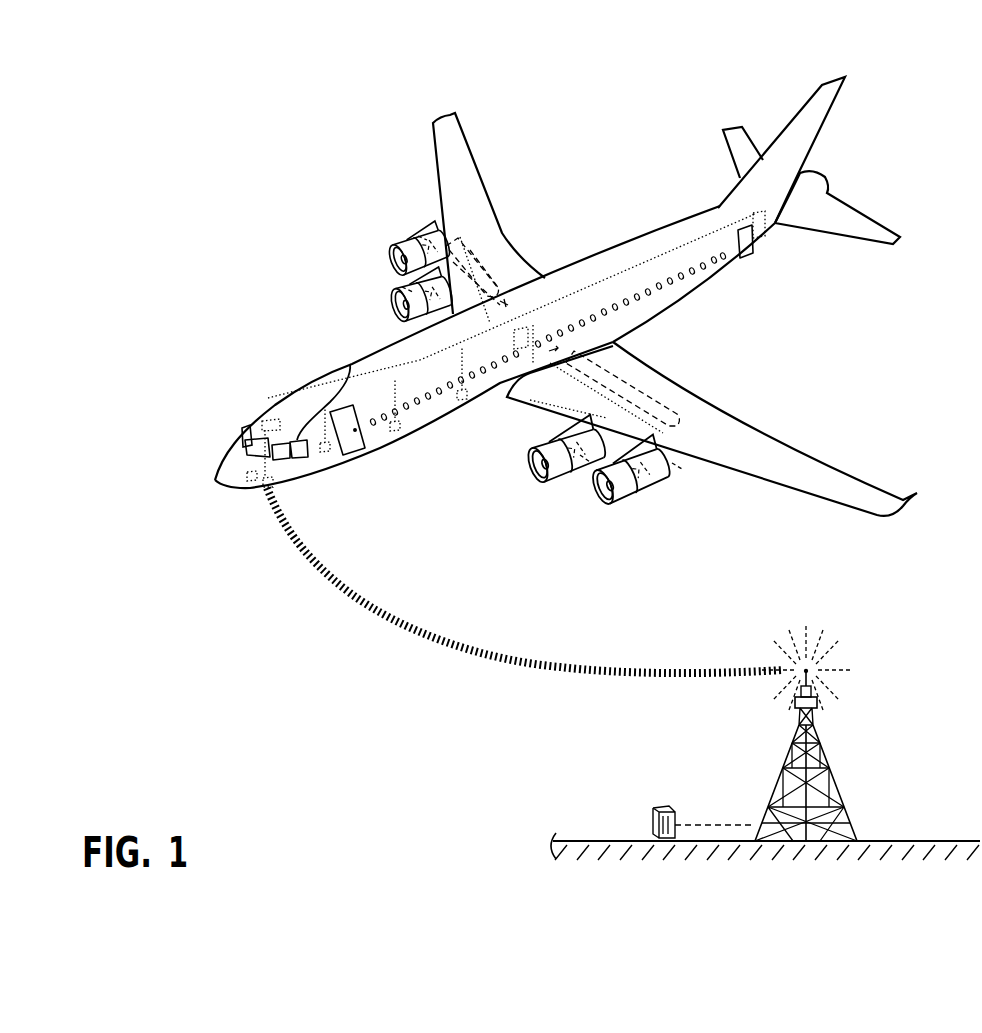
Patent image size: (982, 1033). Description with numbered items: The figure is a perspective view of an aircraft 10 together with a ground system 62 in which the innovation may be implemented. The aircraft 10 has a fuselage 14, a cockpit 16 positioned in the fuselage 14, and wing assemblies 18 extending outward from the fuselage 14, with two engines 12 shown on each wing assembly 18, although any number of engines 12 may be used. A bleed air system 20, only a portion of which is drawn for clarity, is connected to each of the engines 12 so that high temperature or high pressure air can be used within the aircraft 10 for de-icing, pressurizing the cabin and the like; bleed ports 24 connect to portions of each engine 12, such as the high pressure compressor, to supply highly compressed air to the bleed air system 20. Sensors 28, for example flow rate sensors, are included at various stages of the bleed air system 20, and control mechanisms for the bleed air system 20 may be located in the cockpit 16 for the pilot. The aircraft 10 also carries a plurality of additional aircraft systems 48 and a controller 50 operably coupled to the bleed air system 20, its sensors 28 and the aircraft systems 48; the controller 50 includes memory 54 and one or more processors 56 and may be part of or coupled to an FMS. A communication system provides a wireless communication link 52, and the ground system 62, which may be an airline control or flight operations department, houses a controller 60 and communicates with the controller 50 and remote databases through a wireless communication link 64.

The aircraft 10 is at (228, 380).
The engine 12 is at (407, 242).
The fuselage 14 is at (575, 265).
The cockpit 16 is at (350, 364).
The wing assembly 18 is at (448, 145).
The bleed air system 20 is at (637, 400).
The bleed port 24 is at (410, 228).
The sensor 28 is at (420, 233).
The aircraft system 48 is at (250, 477).
The controller 50 is at (281, 422).
The wireless communication link 52 is at (268, 488).
The memory 54 is at (248, 428).
The processor 56 is at (277, 420).
The controller 60 is at (662, 808).
The ground system 62 is at (830, 755).
The wireless communication link 64 is at (804, 668).